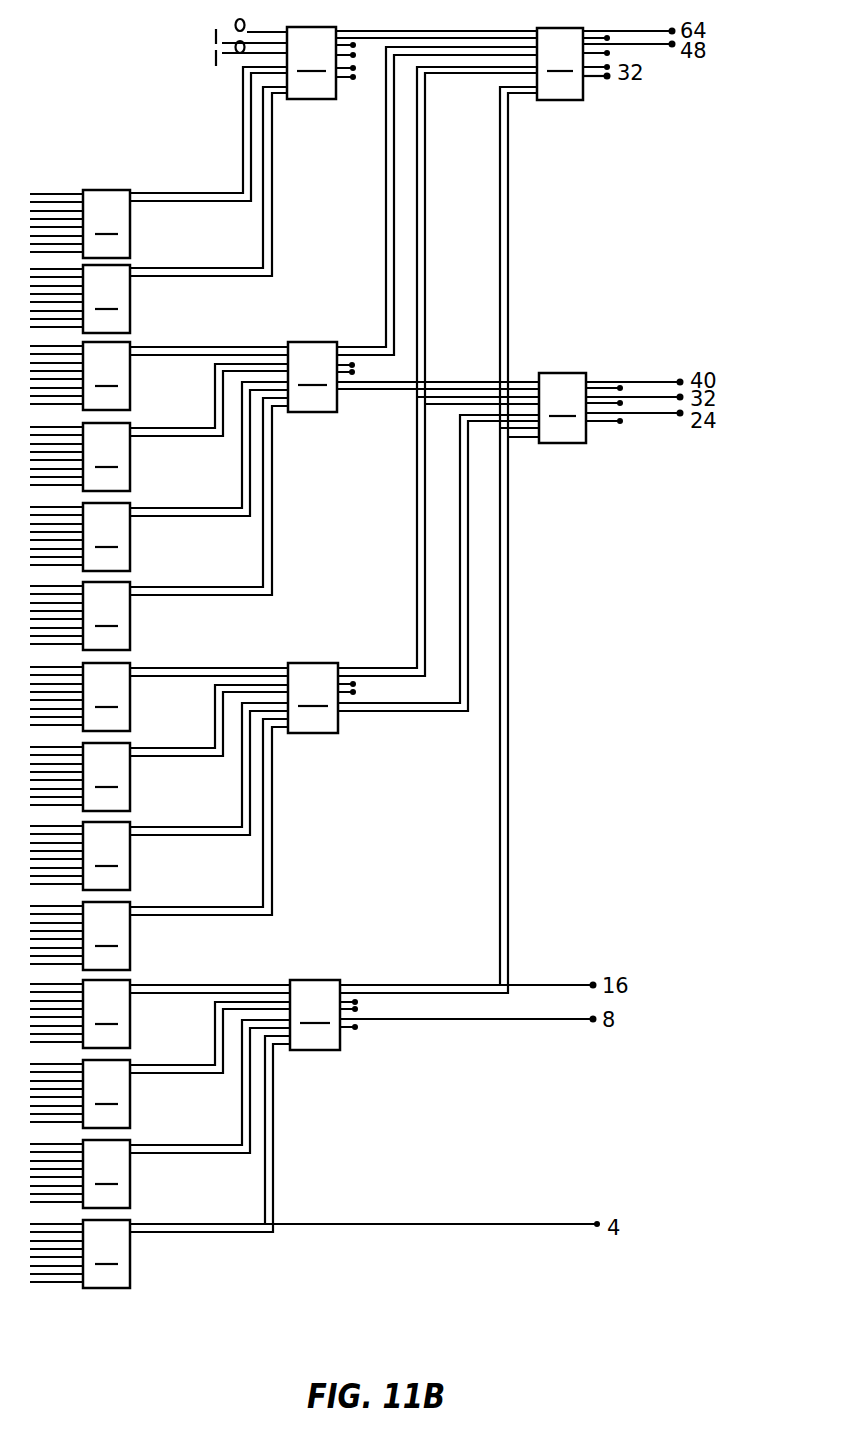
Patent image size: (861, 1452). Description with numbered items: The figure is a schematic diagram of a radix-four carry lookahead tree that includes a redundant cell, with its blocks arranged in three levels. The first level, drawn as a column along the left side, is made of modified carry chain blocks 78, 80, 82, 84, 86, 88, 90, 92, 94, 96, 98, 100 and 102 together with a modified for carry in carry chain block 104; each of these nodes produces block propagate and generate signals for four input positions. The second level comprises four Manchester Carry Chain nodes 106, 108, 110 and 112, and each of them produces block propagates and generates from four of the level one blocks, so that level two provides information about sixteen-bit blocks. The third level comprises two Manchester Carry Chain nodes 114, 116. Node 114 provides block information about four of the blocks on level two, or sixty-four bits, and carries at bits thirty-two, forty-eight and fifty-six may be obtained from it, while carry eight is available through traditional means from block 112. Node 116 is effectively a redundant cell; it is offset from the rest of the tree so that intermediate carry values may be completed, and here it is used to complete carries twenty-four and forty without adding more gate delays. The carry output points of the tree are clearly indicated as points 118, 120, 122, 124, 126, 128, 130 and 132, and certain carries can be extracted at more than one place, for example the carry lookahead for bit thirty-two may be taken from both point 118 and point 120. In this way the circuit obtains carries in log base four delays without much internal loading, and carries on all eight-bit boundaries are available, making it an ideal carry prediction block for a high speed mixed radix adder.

The modified carry chain block 78 is at (80, 224).
The modified carry chain block 80 is at (80, 299).
The modified carry chain block 82 is at (80, 376).
The modified carry chain block 84 is at (80, 457).
The modified carry chain block 86 is at (80, 537).
The modified carry chain block 88 is at (80, 616).
The modified carry chain block 90 is at (80, 697).
The modified carry chain block 92 is at (80, 777).
The modified carry chain block 94 is at (80, 856).
The modified carry chain block 96 is at (80, 936).
The modified carry chain block 98 is at (80, 1014).
The modified carry chain block 100 is at (80, 1094).
The modified carry chain block 102 is at (80, 1174).
The modified for carry in carry chain block 104 is at (80, 1254).
The Manchester Carry Chain node 106 is at (311, 63).
The Manchester Carry Chain node 108 is at (312, 377).
The Manchester Carry Chain node 110 is at (313, 698).
The Manchester Carry Chain node 112 is at (315, 1015).
The Manchester Carry Chain node 114 is at (560, 64).
The redundant cell 116 is at (562, 408).
The carry output point 118 is at (680, 397).
The carry output point 120 is at (607, 77).
The carry output point 122 is at (593, 1019).
The carry output point 124 is at (593, 985).
The carry output point 126 is at (680, 414).
The carry output point 128 is at (680, 382).
The carry output point 130 is at (673, 45).
The carry output point 132 is at (673, 31).